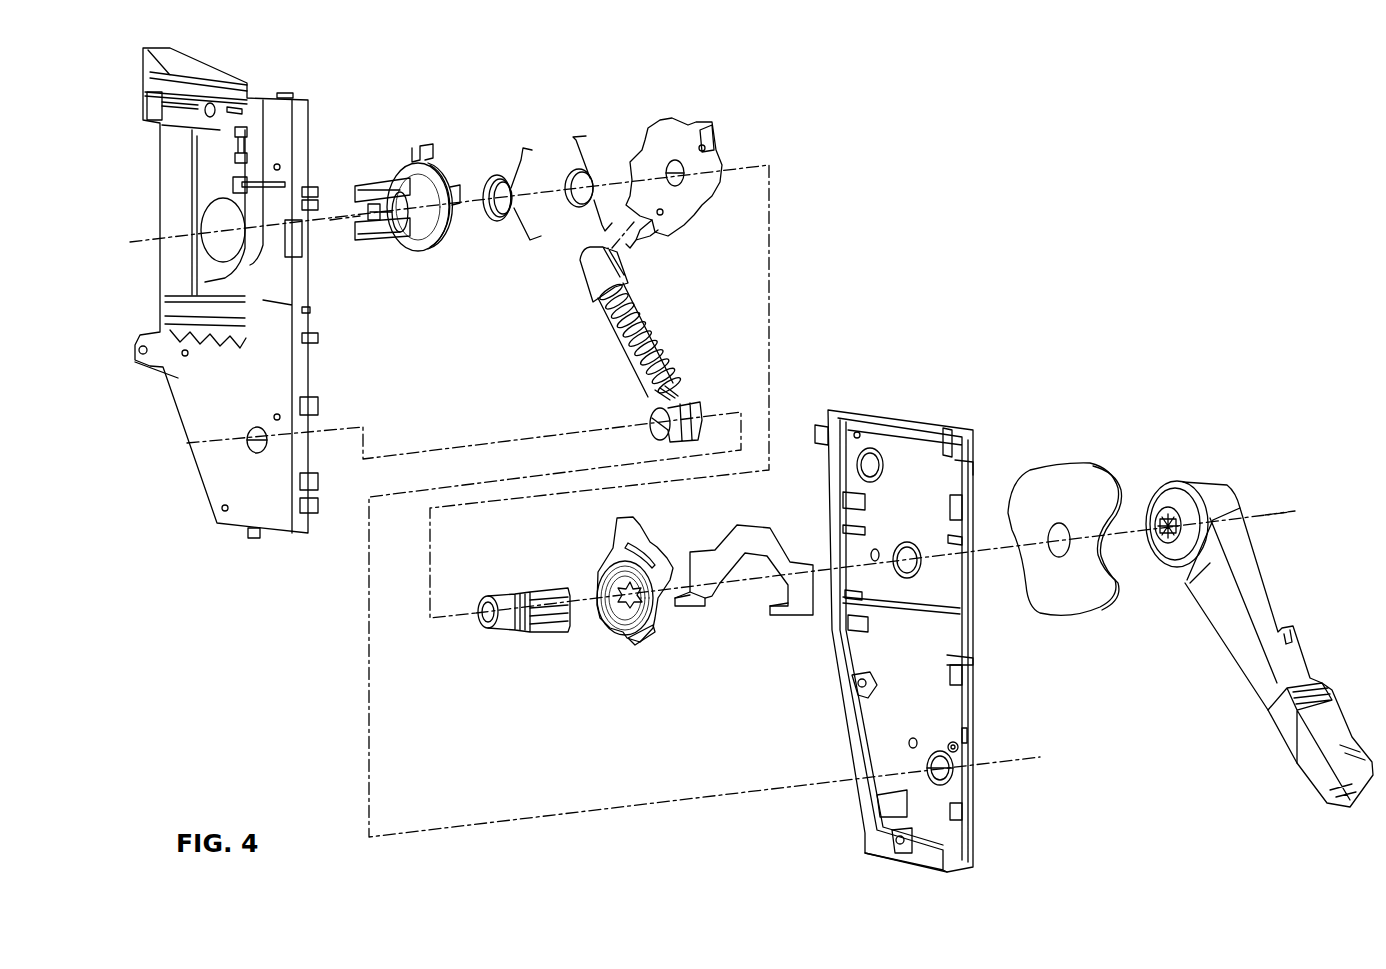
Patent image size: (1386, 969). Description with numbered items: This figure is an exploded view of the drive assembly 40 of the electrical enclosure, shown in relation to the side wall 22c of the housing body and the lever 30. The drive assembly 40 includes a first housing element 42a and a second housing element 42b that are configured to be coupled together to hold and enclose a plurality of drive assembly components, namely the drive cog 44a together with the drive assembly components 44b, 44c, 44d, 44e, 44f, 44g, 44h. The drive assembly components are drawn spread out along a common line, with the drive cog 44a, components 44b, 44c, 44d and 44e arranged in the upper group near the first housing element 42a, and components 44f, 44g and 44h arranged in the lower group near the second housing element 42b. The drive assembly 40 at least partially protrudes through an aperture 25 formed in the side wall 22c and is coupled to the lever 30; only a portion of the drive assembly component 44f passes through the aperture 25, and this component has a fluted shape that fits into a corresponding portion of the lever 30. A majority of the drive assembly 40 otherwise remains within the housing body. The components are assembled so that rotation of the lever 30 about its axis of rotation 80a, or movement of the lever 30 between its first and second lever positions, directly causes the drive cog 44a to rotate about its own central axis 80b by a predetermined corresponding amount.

The drive assembly 40 is at (823, 117).
The first housing element 42a is at (215, 470).
The second housing element 42b is at (973, 712).
The drive cog 44a is at (390, 170).
The drive assembly component 44b is at (495, 175).
The drive assembly component 44c is at (573, 135).
The drive assembly component 44d is at (675, 130).
The drive assembly component 44e is at (592, 290).
The drive assembly component 44f is at (505, 632).
The drive assembly component 44g is at (626, 637).
The drive assembly component 44h is at (772, 620).
The central axis 80b is at (338, 217).
The axis of rotation 80a is at (1283, 510).
The aperture 25 is at (1053, 526).
The side wall 22c is at (1098, 500).
The lever 30 is at (1200, 490).